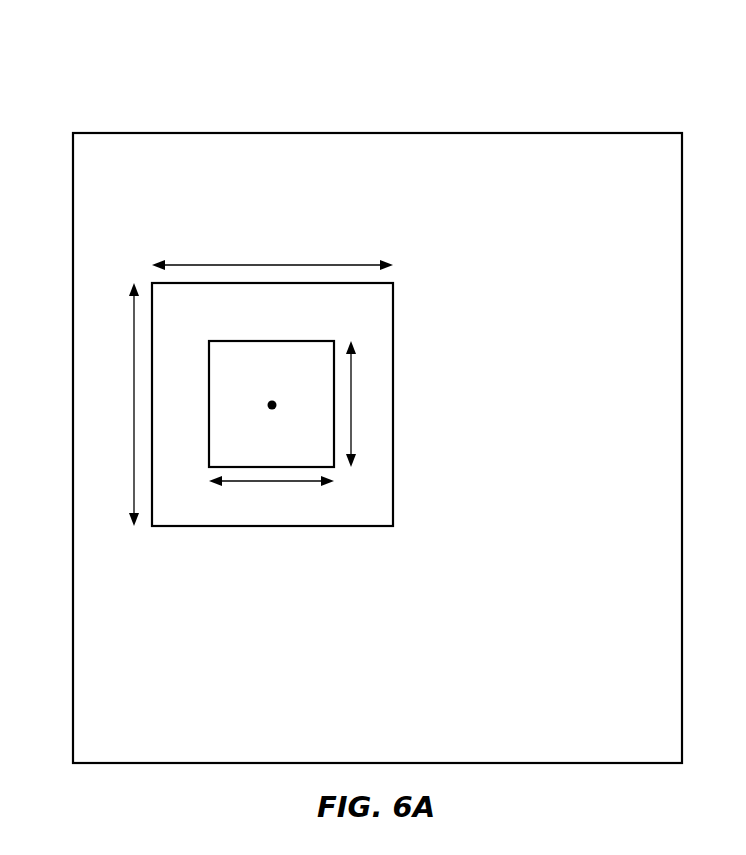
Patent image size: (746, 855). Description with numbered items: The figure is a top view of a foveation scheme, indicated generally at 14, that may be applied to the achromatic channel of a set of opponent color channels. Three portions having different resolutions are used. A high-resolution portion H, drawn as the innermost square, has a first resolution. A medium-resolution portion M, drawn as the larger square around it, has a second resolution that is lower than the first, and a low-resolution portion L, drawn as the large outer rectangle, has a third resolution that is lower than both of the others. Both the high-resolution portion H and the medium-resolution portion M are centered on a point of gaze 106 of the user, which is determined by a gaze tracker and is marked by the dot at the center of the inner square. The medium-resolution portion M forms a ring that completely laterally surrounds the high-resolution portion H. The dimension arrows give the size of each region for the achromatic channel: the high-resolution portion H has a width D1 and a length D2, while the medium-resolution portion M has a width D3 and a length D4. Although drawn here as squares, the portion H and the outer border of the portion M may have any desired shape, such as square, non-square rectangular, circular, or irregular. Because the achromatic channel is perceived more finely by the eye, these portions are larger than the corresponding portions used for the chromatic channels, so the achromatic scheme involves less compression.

The semiconductor device / structure 14 is at (640, 66).
The low-resolution portion L is at (375, 133).
The medium-resolution portion M is at (346, 283).
The high-resolution portion H is at (277, 341).
The point of gaze 106 is at (272, 401).
The width of high-resolution portion D1 is at (272, 481).
The length of high-resolution portion D2 is at (352, 407).
The width of medium-resolution portion D3 is at (251, 265).
The length of medium-resolution portion D4 is at (134, 407).